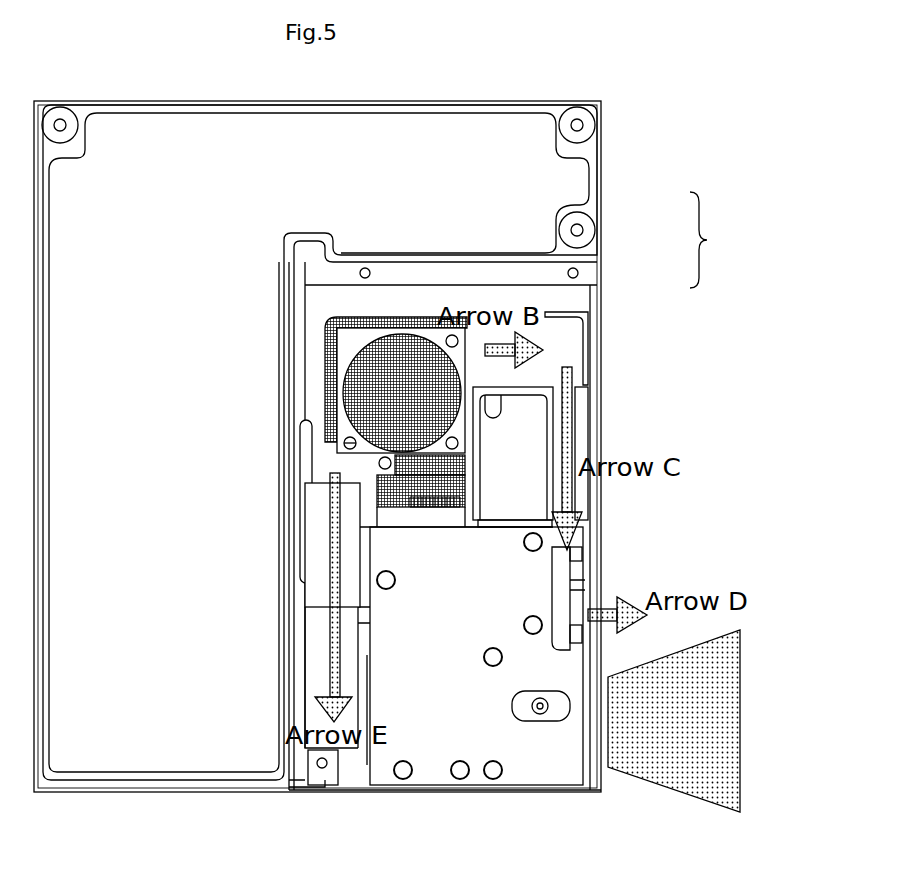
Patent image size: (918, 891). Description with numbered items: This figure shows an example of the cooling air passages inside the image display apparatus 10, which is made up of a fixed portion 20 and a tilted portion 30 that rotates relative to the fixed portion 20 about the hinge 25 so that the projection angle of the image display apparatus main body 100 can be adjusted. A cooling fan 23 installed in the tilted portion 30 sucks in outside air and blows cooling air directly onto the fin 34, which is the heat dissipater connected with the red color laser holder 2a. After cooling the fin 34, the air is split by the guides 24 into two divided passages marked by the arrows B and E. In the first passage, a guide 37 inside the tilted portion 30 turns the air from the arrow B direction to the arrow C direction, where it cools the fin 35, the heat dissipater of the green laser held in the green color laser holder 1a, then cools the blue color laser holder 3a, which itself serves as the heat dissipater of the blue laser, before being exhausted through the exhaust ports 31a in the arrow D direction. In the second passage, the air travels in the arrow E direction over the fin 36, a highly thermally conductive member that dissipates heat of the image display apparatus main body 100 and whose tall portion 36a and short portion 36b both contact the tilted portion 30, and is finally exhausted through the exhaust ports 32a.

The image display apparatus 10 is at (721, 240).
The fixed portion 20 is at (563, 197).
The tilted portion 30 is at (558, 300).
The guides 24 is at (327, 317).
The cooling fan 23 is at (350, 345).
The fin 34 is at (388, 398).
The red color laser holder 2a is at (388, 517).
The green color laser holder 1a is at (513, 497).
The guide 37 is at (582, 320).
The fin 35 is at (583, 418).
The blue color laser holder 3a is at (562, 595).
The fin 36 is at (318, 573).
The tall portion 36a is at (318, 547).
The short portion 36b is at (318, 686).
The exhaust ports 31a is at (600, 643).
The hinge 25 is at (300, 768).
The exhaust ports 32a is at (348, 793).
The image display apparatus main body 100 is at (470, 728).